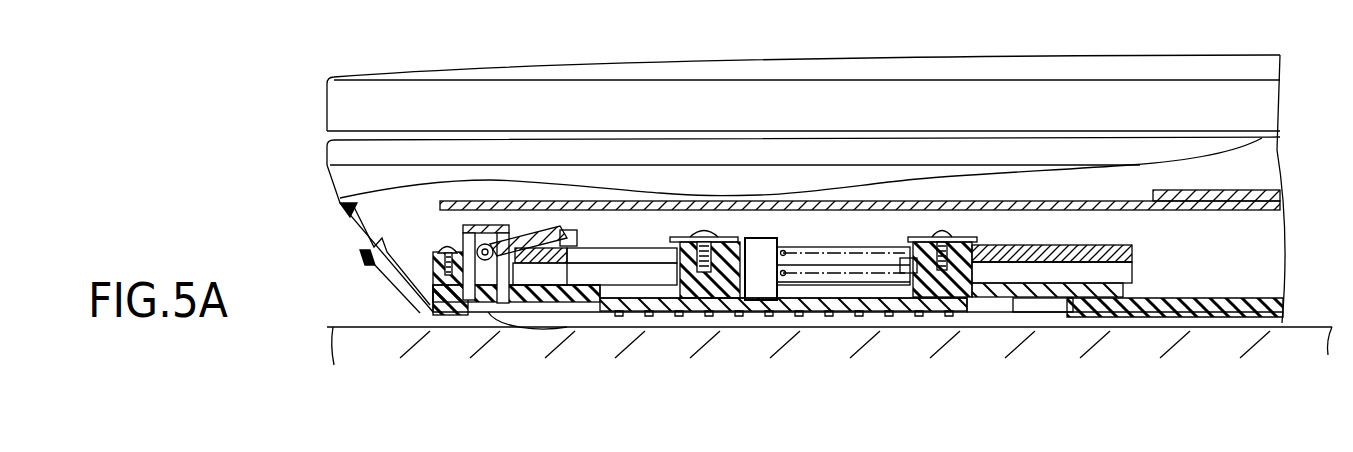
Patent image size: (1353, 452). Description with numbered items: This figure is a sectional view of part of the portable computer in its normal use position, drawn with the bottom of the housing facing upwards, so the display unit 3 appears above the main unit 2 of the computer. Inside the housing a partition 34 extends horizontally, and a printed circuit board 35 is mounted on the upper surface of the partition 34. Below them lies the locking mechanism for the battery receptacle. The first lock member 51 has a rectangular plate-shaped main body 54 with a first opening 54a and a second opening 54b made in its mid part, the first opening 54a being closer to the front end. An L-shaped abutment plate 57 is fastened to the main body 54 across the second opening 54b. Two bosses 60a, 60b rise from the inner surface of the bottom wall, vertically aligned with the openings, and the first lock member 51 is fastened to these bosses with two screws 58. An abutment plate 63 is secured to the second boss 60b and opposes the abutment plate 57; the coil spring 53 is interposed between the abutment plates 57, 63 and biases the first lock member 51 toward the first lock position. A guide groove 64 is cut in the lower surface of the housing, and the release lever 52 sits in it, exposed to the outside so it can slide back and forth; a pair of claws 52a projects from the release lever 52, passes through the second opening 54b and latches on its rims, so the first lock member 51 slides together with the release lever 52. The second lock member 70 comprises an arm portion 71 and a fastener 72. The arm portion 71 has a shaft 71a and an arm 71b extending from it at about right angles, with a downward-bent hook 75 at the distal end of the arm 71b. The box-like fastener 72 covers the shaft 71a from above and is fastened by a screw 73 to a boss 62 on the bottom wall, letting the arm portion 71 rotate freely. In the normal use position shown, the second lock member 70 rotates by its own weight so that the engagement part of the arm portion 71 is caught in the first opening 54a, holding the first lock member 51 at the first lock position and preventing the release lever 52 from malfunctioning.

The main unit 2 is at (322, 144).
The display unit 3 is at (322, 100).
The partition 34 is at (1283, 210).
The printed circuit board 35 is at (1283, 192).
The first lock member 51 is at (1075, 245).
The release lever 52 is at (750, 302).
The claws 52a is at (758, 250).
The coil spring 53 is at (838, 228).
The main body 54 is at (1133, 252).
The first opening 54a is at (626, 262).
The second opening 54b is at (882, 236).
The abutment plate 57 is at (784, 262).
The screws 58 is at (700, 232).
The first boss 60a is at (691, 300).
The second boss 60b is at (945, 300).
The boss 62 is at (447, 300).
The abutment plate 63 is at (910, 292).
The guide groove 64 is at (1022, 315).
The second lock member 70 is at (564, 32).
The arm portion 71 is at (549, 240).
The shaft 71a is at (483, 302).
The arm 71b is at (515, 295).
The fastener 72 is at (478, 238).
The screw 73 is at (445, 248).
The hook 75 is at (577, 318).